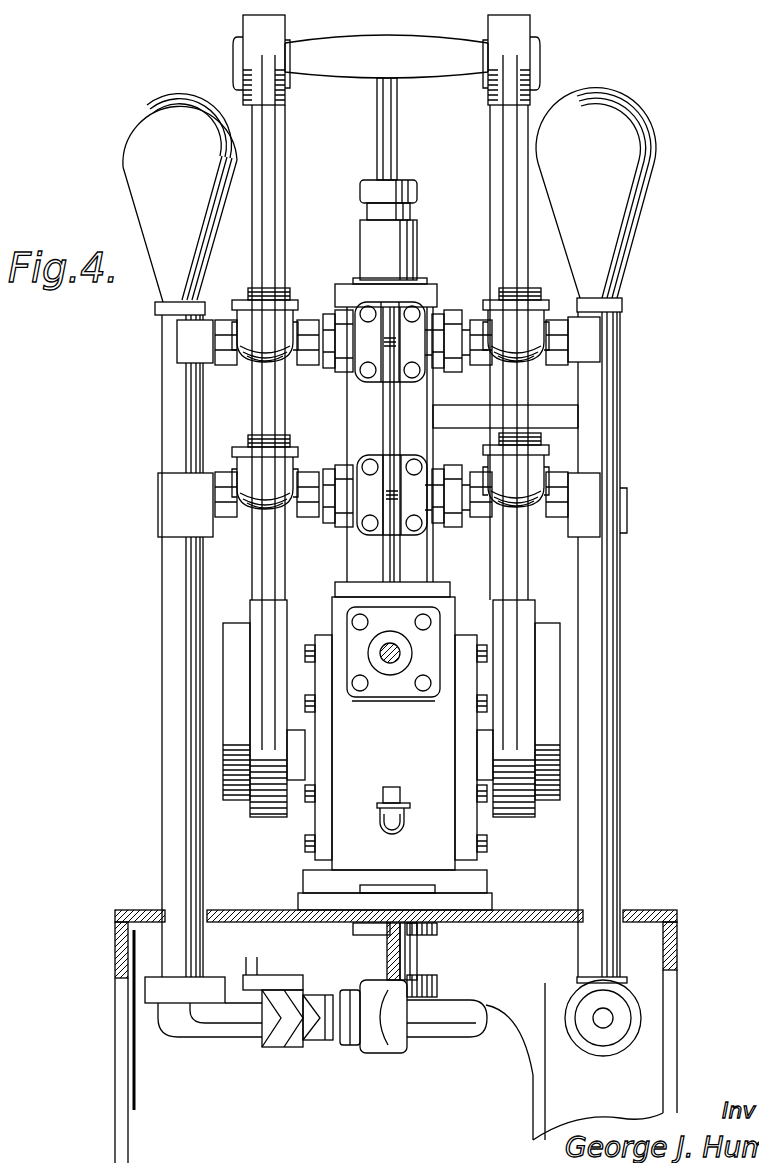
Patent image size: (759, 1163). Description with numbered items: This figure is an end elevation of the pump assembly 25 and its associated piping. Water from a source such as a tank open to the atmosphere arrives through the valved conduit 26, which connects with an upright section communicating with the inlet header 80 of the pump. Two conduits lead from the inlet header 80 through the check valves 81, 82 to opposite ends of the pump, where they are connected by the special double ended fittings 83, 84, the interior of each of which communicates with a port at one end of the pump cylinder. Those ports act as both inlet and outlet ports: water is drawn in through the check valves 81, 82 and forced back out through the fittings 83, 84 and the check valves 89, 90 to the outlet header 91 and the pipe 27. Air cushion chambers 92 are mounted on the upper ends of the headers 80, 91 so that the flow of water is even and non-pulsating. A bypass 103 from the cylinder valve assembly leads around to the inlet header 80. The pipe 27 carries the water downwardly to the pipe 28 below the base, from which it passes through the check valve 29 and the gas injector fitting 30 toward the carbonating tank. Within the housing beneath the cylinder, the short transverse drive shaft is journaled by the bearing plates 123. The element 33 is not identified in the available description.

The pump assembly 25 is at (417, 262).
The valved conduit 26 is at (608, 808).
The pipe 27 is at (176, 713).
The pipe 28 is at (223, 1022).
The check valve 29 is at (280, 1030).
The gas injector fitting 30 is at (328, 1035).
The bracket 33 is at (410, 962).
The inlet header 80 is at (605, 415).
The check valve 81 is at (523, 310).
The check valve 82 is at (532, 480).
The double ended fitting 83 is at (390, 330).
The double ended fitting 84 is at (390, 495).
The check valve 89 is at (265, 332).
The check valve 90 is at (260, 482).
The outlet header 91 is at (170, 409).
The air cushion chamber 92 is at (140, 172).
The bypass 103 is at (460, 413).
The bearing plate 123 is at (302, 797).